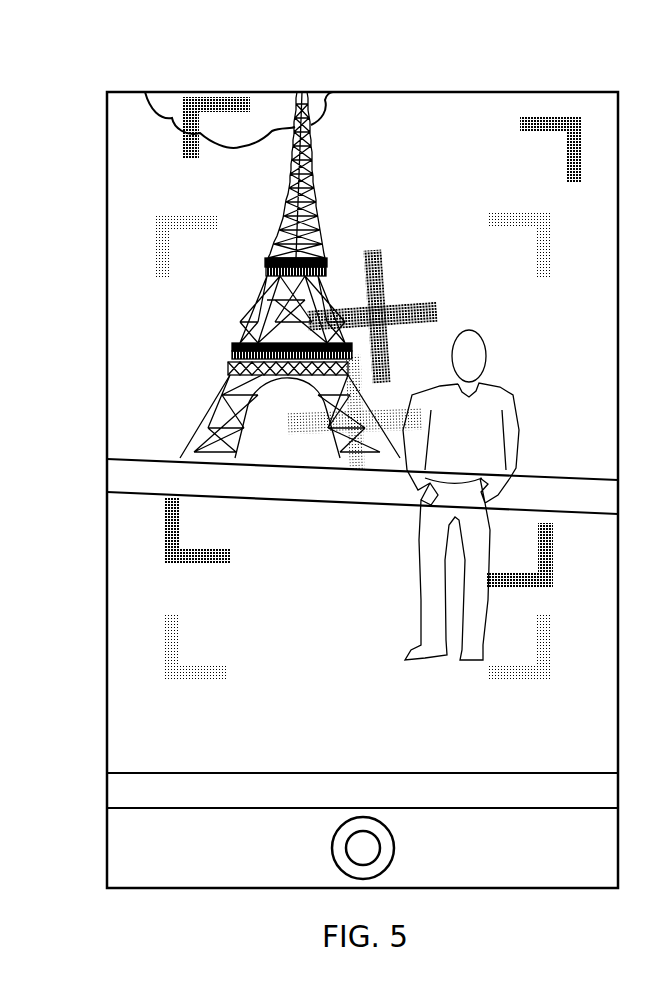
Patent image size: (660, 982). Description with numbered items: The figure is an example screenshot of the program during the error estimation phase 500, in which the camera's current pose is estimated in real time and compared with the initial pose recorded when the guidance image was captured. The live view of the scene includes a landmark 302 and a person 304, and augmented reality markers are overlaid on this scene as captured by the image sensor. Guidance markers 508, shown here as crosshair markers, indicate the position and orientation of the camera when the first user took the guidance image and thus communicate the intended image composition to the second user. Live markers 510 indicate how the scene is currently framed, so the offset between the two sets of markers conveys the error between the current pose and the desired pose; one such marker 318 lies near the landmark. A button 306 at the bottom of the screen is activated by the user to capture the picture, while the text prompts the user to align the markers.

The error estimation phase 500 is at (463, 78).
The landmark 302 is at (312, 213).
The person in image 304 is at (478, 420).
The button 306 is at (363, 848).
The cross-shaped alignment marker (light) 318 is at (356, 477).
The guidance markers 508 is at (205, 108).
The live markers 510 is at (162, 265).